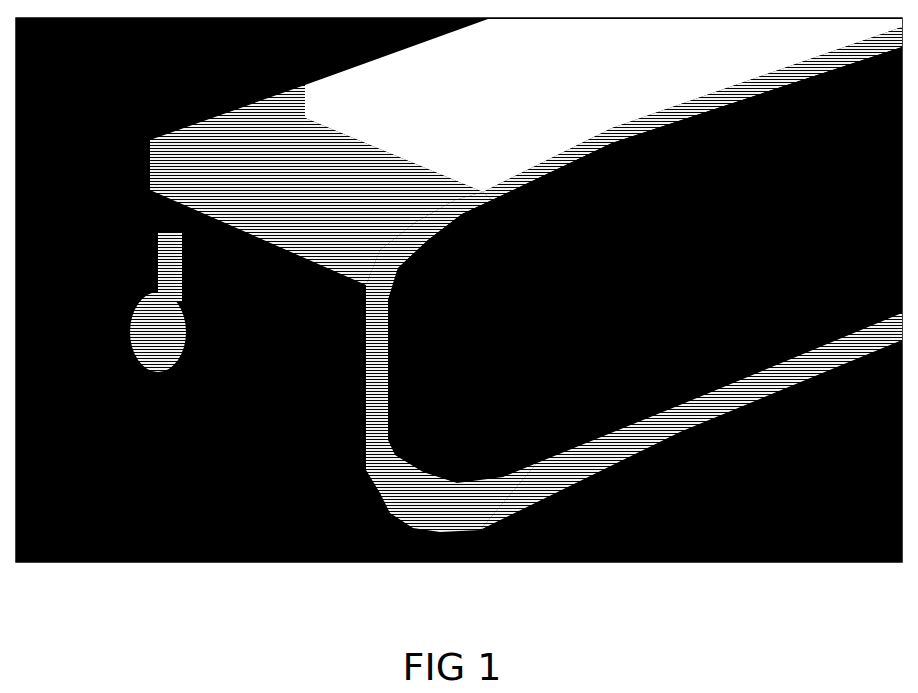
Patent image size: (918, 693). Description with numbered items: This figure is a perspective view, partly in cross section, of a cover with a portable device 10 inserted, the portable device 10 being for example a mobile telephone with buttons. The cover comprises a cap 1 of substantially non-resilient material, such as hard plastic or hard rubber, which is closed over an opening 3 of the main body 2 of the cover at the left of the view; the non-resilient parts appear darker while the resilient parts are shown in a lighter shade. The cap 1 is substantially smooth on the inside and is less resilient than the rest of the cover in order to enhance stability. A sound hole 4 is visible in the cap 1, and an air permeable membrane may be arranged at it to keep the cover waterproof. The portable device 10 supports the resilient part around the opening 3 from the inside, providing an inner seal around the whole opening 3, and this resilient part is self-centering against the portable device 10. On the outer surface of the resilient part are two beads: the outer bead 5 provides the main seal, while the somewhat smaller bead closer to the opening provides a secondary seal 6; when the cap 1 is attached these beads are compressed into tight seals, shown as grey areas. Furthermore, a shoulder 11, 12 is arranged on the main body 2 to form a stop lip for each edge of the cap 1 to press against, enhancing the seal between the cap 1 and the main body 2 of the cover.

The cap 1 is at (160, 160).
The main body of the cover 2 is at (603, 105).
The opening 3 is at (390, 356).
The sound hole 4 is at (203, 338).
The outer bead 5 is at (378, 215).
The secondary seal bead 6 is at (258, 230).
The portable device 10 is at (645, 265).
The shoulder 11 is at (473, 192).
The shoulder 12 is at (527, 475).